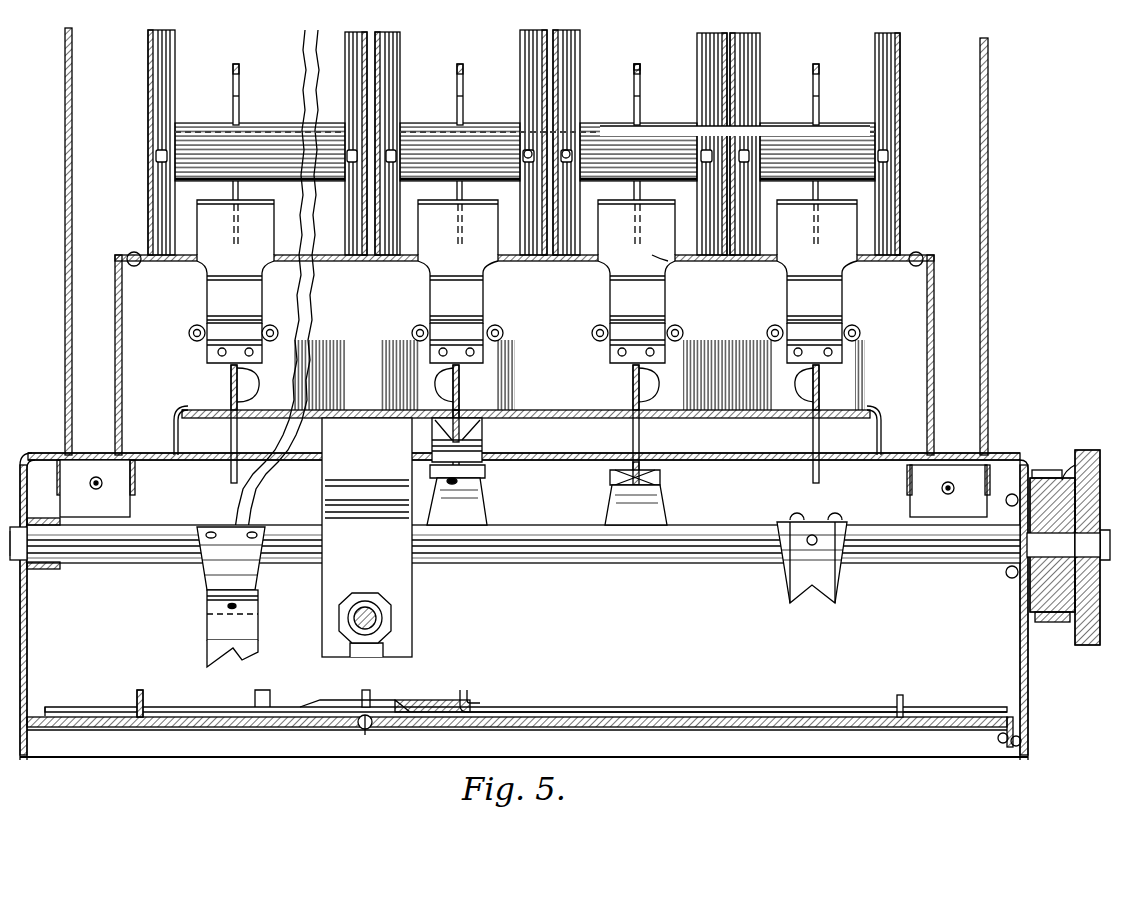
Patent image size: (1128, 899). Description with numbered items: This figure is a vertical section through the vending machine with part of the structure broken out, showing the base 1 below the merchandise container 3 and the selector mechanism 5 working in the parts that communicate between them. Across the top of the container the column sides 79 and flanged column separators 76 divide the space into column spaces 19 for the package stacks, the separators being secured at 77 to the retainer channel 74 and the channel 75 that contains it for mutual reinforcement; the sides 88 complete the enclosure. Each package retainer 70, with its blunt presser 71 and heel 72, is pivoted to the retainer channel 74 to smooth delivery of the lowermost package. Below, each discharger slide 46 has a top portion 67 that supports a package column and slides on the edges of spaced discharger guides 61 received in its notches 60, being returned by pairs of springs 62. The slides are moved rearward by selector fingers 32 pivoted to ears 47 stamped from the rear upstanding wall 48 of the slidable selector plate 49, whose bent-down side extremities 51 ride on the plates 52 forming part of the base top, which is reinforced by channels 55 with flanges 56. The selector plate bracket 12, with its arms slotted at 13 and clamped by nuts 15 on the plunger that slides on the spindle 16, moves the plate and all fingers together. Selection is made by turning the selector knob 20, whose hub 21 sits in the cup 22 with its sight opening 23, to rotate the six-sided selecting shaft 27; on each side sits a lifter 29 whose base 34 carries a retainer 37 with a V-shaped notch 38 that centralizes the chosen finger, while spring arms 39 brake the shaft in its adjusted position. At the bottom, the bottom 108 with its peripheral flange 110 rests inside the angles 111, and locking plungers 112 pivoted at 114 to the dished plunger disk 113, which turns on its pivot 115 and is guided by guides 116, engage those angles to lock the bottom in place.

The base 1 is at (1028, 692).
The merchandise container 3 is at (100, 131).
The selector mechanism 5 is at (58, 480).
The selector plate bracket 12 is at (372, 424).
The slot 13 is at (386, 646).
The nuts 15 is at (348, 616).
The spindle 16 is at (392, 624).
The column spaces 19 is at (526, 94).
The selector knob 20 is at (1098, 645).
The hub 21 is at (1075, 640).
The cup 22 is at (1051, 622).
The sight opening 23 is at (1050, 468).
The selecting shaft 27 is at (930, 555).
The lifter 29 is at (786, 580).
The selector finger 32 is at (640, 438).
The base 34 is at (220, 570).
The retainer 37 is at (228, 634).
The notch 38 is at (218, 658).
The spring arms 39 is at (60, 522).
The discharger slide 46 is at (645, 305).
The ears 47 is at (232, 382).
The rear upstanding wall 48 is at (552, 346).
The selector plate 49 is at (592, 420).
The bent-down side extremities 51 is at (176, 440).
The plates 52 is at (140, 460).
The channels 55 is at (980, 492).
The flanges 56 is at (119, 516).
The notches 60 is at (660, 258).
The discharger guides 61 is at (508, 258).
The springs 62 is at (415, 328).
The top portion 67 is at (616, 200).
The package retainer 70 is at (634, 106).
The presser 71 is at (637, 66).
The heel 72 is at (623, 224).
The retainer channel 74 is at (662, 130).
The channel 75 is at (772, 140).
The column separators 76 is at (557, 63).
The securing point 77 is at (566, 150).
The column sides 79 is at (148, 97).
The sides 88 is at (65, 190).
The bottom 108 is at (688, 730).
The peripheral flange 110 is at (1005, 748).
The angles 111 is at (30, 717).
The locking plungers 112 is at (167, 707).
The plunger disk 113 is at (410, 708).
The pivot 114 is at (472, 702).
The pivot 115 is at (363, 735).
The guides 116 is at (140, 692).